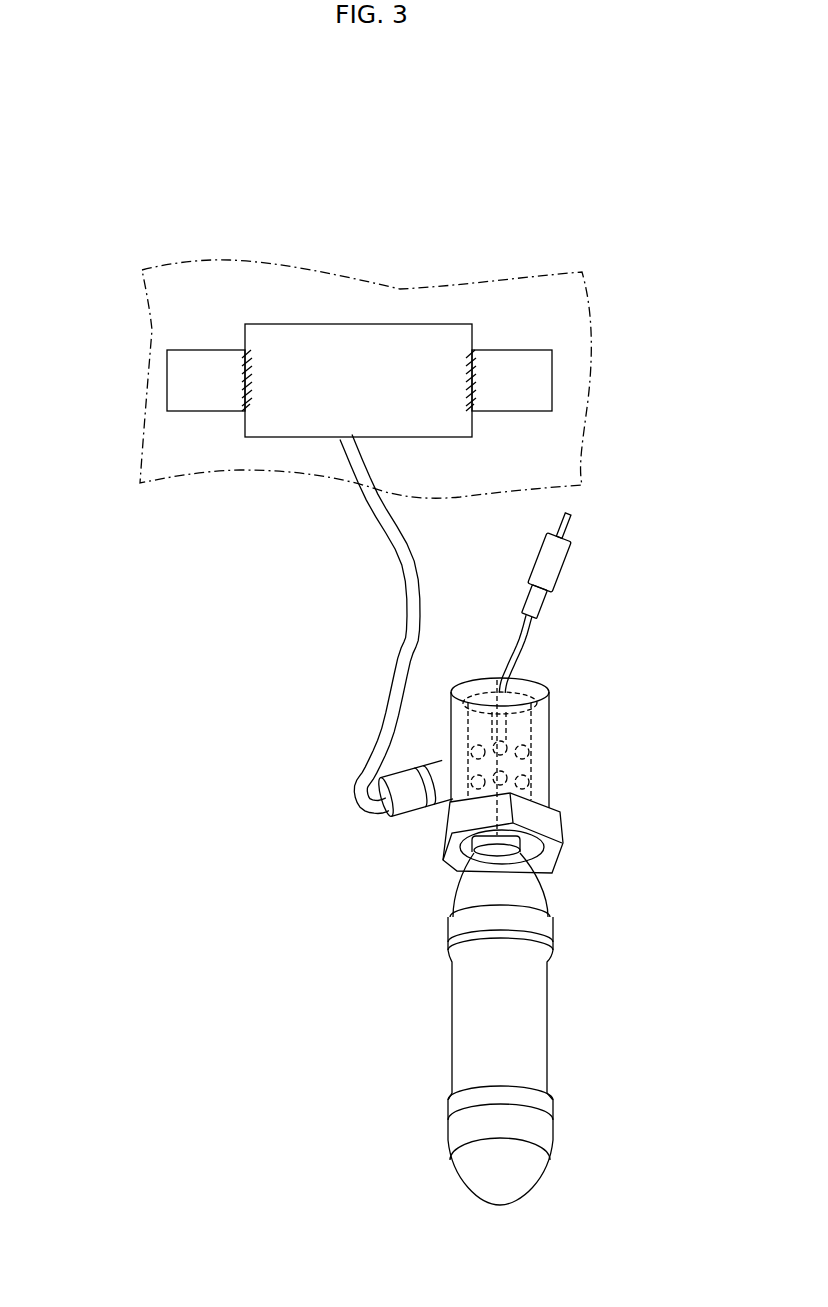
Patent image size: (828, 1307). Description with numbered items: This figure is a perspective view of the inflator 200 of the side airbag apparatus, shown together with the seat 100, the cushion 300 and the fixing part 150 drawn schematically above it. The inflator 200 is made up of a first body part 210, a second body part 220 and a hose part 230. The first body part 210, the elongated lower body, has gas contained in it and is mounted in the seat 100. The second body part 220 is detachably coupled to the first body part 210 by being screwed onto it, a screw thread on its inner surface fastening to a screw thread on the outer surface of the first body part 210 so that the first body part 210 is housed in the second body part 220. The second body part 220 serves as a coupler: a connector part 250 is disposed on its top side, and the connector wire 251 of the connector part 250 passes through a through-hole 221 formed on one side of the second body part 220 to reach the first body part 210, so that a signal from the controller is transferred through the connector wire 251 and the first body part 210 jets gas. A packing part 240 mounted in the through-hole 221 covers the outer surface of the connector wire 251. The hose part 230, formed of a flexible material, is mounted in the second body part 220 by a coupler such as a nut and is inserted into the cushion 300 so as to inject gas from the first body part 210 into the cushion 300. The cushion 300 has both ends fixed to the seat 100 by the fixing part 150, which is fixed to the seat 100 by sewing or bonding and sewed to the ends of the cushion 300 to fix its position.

The seat 100 is at (197, 295).
The fixing part 150 is at (182, 380).
The cushion 300 is at (398, 347).
The inflator 200 is at (377, 1007).
The first body part 210 is at (527, 1015).
The second body part 220 is at (552, 779).
The through-hole 221 is at (497, 706).
The hose part 230 is at (405, 662).
The packing part 240 is at (535, 716).
The connector part 250 is at (555, 562).
The connector wire 251 is at (515, 643).